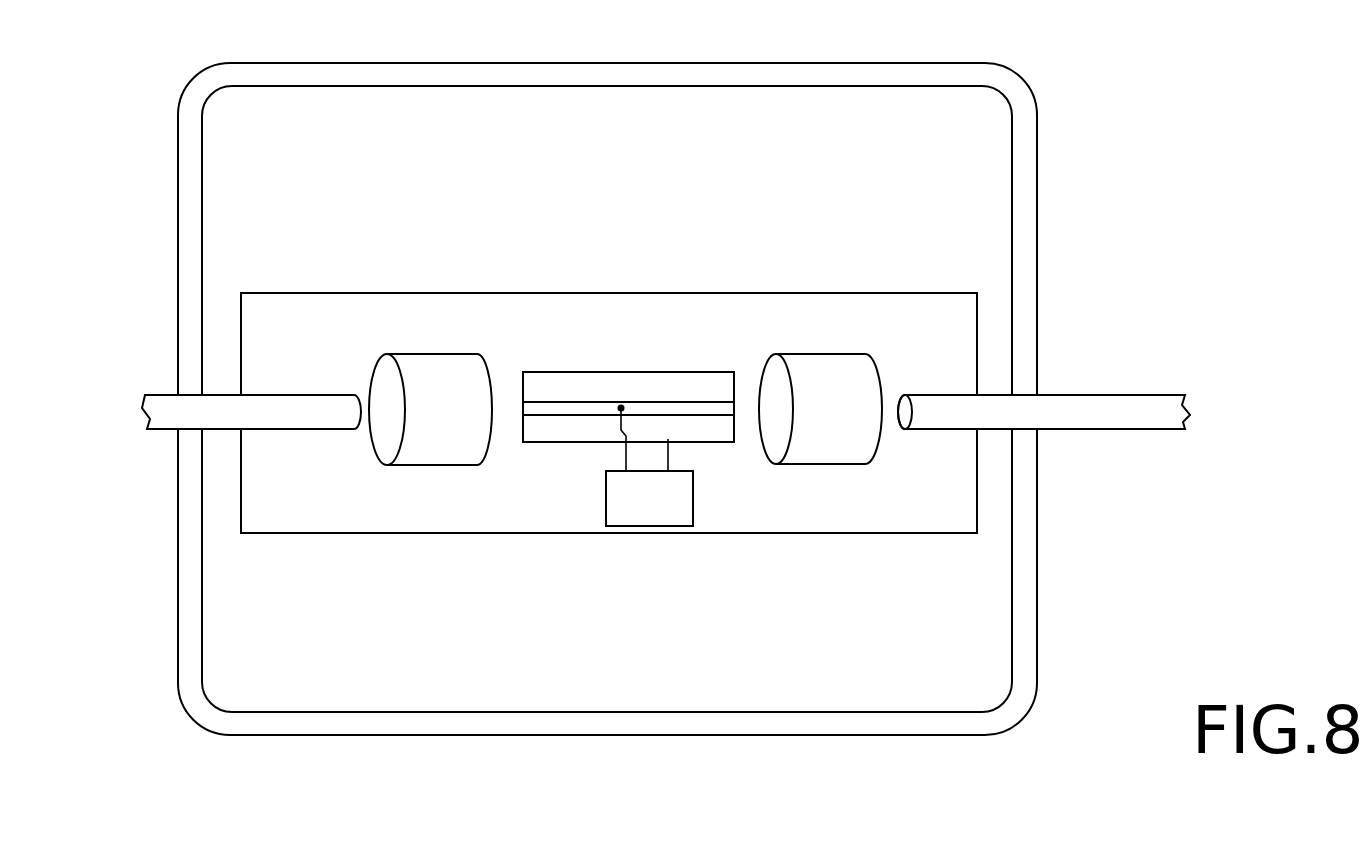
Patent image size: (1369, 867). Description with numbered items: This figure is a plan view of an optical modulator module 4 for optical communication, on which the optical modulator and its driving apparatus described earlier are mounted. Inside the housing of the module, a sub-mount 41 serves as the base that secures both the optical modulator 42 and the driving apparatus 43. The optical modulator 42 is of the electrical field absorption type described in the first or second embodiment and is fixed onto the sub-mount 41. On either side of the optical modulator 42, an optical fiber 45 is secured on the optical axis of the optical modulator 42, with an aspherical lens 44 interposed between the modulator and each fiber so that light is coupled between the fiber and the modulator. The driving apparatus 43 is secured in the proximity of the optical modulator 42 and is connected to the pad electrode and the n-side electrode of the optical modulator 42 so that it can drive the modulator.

The optical modulator module 4 is at (801, 725).
The sub-mount 41 is at (958, 513).
The optical modulator 42 is at (552, 433).
The driving apparatus 43 is at (659, 507).
The aspherical lens 44 is at (384, 385).
The optical fiber 45 is at (203, 418).